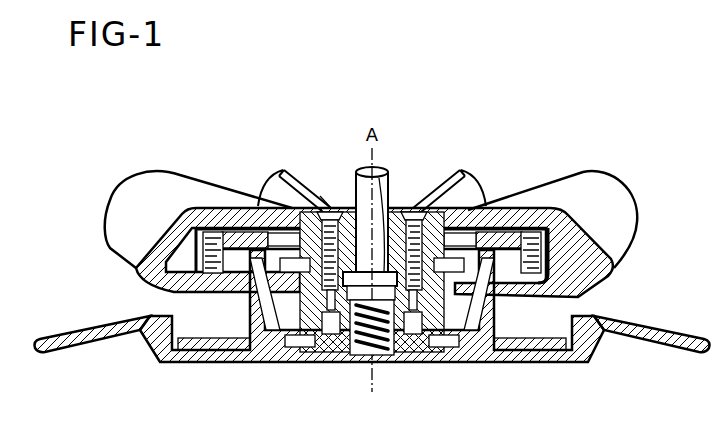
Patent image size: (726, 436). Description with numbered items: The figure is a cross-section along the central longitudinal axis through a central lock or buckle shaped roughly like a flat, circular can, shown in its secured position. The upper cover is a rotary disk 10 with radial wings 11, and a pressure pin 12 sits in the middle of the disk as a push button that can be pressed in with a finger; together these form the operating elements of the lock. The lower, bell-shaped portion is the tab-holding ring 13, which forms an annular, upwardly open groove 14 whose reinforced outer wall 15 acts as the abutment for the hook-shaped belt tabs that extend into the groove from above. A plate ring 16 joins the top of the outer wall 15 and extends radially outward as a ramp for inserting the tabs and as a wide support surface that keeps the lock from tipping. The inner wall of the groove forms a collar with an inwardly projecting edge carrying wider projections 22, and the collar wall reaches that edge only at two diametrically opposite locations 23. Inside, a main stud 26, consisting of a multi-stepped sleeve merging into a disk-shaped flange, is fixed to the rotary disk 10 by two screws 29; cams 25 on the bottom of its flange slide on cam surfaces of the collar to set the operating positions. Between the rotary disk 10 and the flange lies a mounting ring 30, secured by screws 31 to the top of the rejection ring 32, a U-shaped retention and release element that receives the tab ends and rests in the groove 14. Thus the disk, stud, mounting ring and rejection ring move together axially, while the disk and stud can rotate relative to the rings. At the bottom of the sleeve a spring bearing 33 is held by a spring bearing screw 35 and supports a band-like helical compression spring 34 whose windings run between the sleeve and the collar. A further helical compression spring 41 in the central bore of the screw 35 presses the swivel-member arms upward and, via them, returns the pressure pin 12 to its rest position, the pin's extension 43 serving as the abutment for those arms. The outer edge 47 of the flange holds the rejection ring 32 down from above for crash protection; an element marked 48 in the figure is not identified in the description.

The rotary disk 10 is at (178, 210).
The radial wings 11 is at (132, 182).
The pressure pin 12 is at (362, 182).
The tab-holding ring 13 is at (197, 358).
The groove 14 is at (232, 330).
The outer wall 15 is at (157, 330).
The plate ring 16 is at (82, 345).
The wider projections 22 is at (292, 240).
The diametrically opposite locations 23 is at (470, 318).
The cams 25 is at (265, 352).
The main stud 26 is at (410, 340).
The screws 29 is at (327, 210).
The mounting ring 30 is at (243, 237).
The screws 31 is at (207, 238).
The rejection ring 32 is at (215, 345).
The spring bearing 33 is at (296, 347).
The band-like helical compression spring 34 is at (447, 340).
The spring bearing screw 35 is at (330, 352).
The helical compression spring 41 is at (367, 355).
The extension 43 is at (396, 212).
The outer edge 47 is at (211, 302).
The gap 48 is at (577, 306).